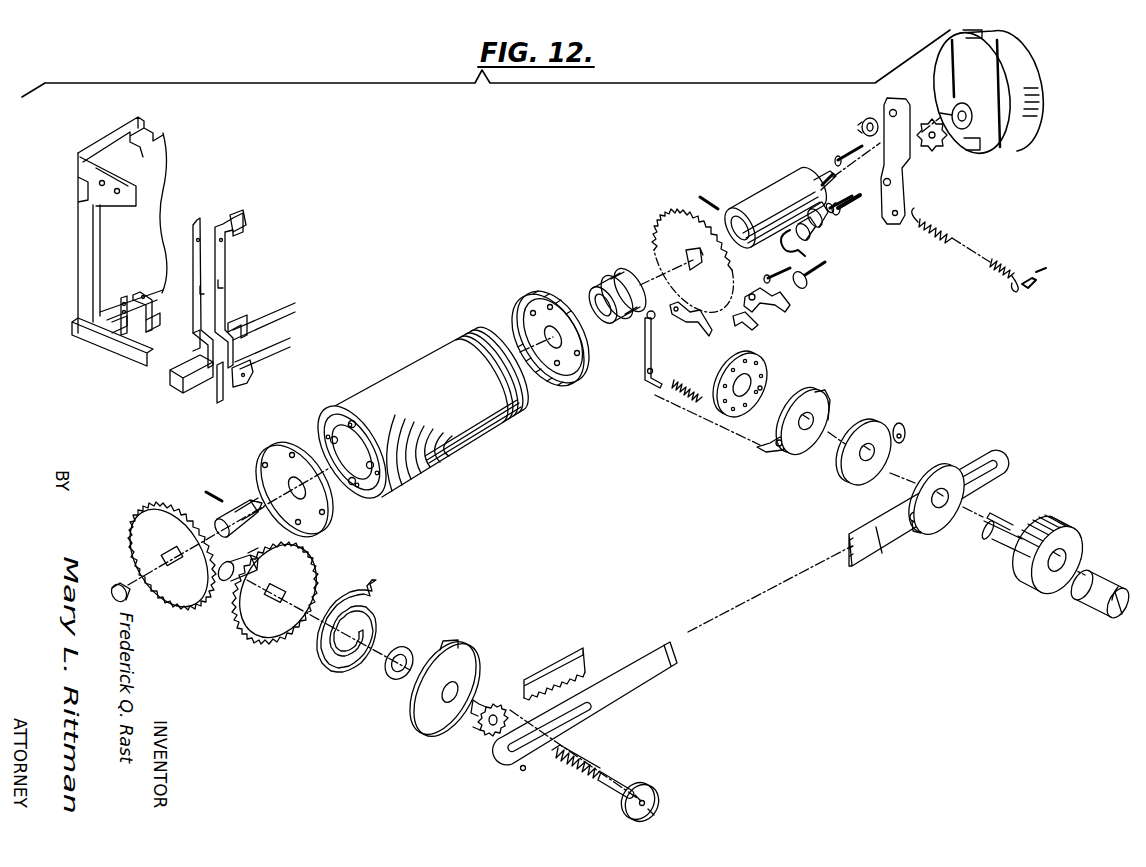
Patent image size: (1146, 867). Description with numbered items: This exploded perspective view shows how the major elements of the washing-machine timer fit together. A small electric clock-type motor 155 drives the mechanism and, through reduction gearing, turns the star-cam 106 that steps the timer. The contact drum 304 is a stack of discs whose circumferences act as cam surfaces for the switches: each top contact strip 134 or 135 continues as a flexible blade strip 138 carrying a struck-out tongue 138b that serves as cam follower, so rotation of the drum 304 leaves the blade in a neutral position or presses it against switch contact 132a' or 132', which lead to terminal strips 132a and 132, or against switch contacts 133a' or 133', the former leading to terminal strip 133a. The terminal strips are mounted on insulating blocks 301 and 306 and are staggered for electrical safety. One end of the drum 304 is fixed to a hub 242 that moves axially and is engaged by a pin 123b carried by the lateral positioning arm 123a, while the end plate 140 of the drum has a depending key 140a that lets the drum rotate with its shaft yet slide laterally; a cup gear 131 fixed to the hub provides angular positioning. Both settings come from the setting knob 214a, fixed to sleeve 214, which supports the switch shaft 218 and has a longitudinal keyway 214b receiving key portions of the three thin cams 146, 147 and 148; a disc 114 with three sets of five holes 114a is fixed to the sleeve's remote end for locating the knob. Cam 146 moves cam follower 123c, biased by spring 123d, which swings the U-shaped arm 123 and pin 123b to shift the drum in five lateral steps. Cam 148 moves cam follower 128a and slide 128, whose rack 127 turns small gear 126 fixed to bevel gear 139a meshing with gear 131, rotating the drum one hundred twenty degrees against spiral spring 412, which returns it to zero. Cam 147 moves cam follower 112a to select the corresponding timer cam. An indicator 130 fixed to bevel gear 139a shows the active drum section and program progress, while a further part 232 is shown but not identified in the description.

The insulating block 301 is at (82, 172).
The top contact strip 134 is at (200, 220).
The top contact strip 135 is at (242, 216).
The blade strip 138 is at (232, 258).
The tongue 138b is at (222, 284).
The switch contact 133' is at (270, 334).
The switch contact 132a' is at (128, 288).
The switch contact 133a' is at (139, 299).
The terminal strip 133a is at (170, 318).
The terminal strip 132a is at (152, 332).
The switch contact 132' is at (176, 349).
The insulating block 306 is at (187, 370).
The terminal strip 132 is at (202, 393).
The end plate 140 is at (293, 434).
The key 140a is at (287, 483).
The cup gear 131 is at (168, 503).
The bevel gear 139a is at (310, 577).
The spiral spring 412 is at (383, 613).
The contact drum 304 is at (443, 460).
The hub 242 is at (617, 280).
The pin 123b is at (648, 322).
The U-shaped arm 123 is at (645, 385).
The drum positioning arm 123a is at (653, 355).
The spring 123d is at (700, 410).
The cam follower 123c is at (780, 448).
The disc 114 is at (757, 375).
The holes 114a is at (763, 388).
The cam 146 is at (815, 395).
The cam 147 is at (853, 483).
The cam follower 112a is at (900, 430).
The cam 148 is at (947, 470).
The sleeve 214 is at (1007, 537).
The keyway 214b is at (1002, 513).
The setting knob 214a is at (1050, 523).
The switch shaft 218 is at (1107, 580).
The slide 128 is at (658, 642).
The cam follower 128a is at (918, 528).
The electric motor 155 is at (1033, 90).
The star-cam 106 is at (942, 150).
The rack 127 is at (580, 650).
The small gear 126 is at (497, 700).
The pin and spring 232 is at (615, 778).
The indicator 130 is at (663, 790).